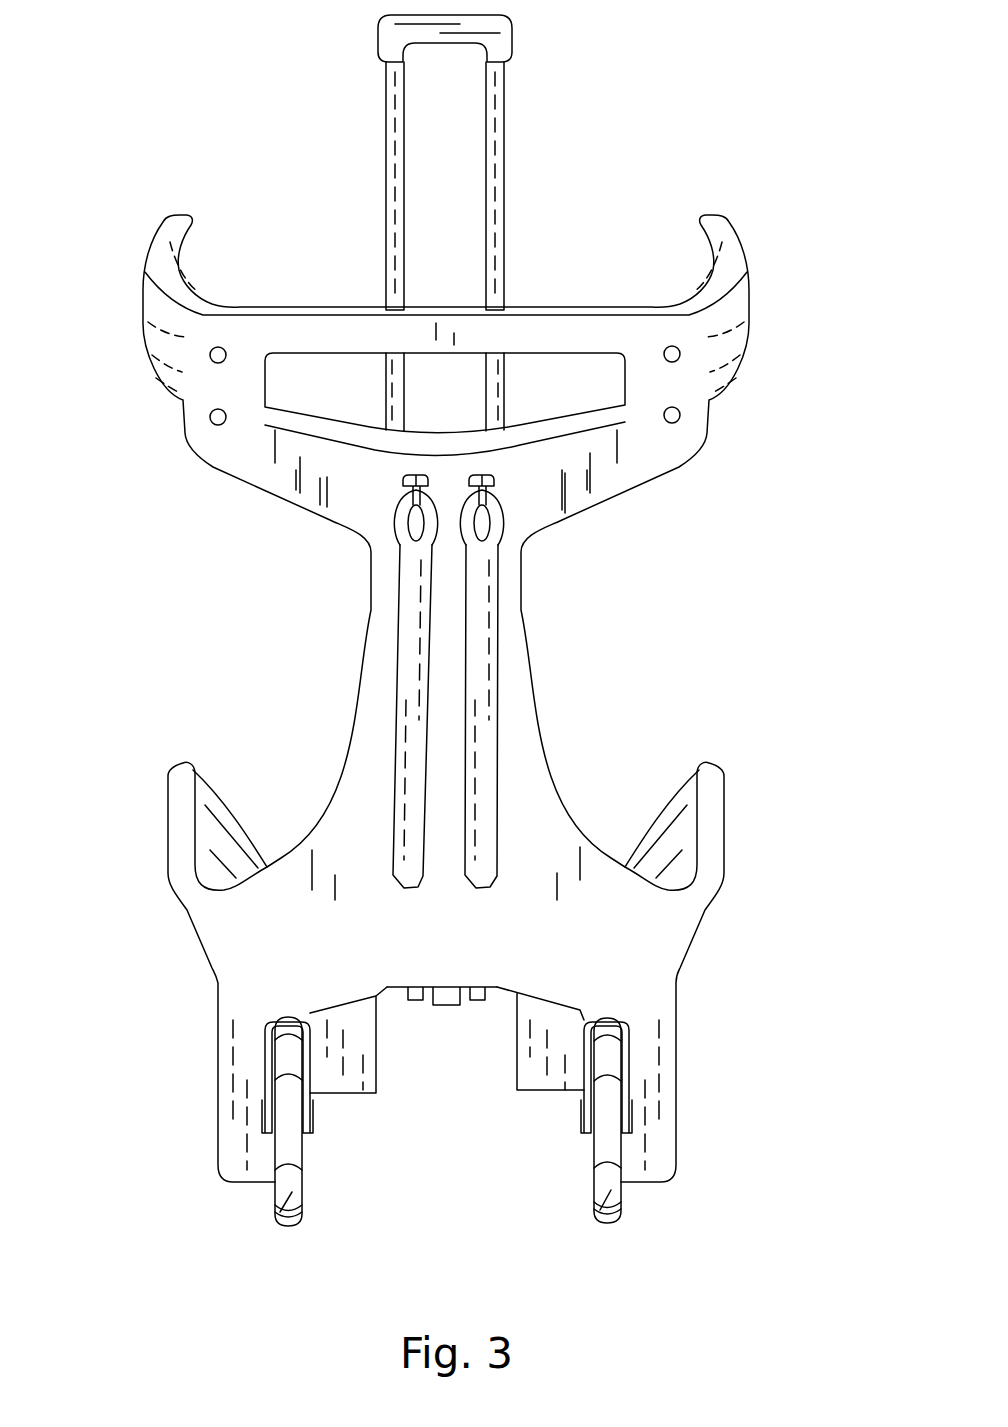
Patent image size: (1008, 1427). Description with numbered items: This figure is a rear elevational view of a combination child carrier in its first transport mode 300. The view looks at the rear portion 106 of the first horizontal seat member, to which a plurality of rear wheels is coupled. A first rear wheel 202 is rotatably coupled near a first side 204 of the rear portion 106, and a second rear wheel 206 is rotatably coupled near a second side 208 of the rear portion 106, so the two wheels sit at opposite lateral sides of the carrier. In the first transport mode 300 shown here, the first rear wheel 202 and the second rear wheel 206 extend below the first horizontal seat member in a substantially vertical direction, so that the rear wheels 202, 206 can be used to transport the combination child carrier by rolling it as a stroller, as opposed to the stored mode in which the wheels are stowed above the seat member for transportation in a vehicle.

The first transport mode 300 is at (278, 97).
The rear portion 106 is at (557, 728).
The second side 208 is at (188, 1052).
The first side 204 is at (687, 1110).
The second rear wheel 206 is at (289, 1191).
The first rear wheel 202 is at (608, 1190).